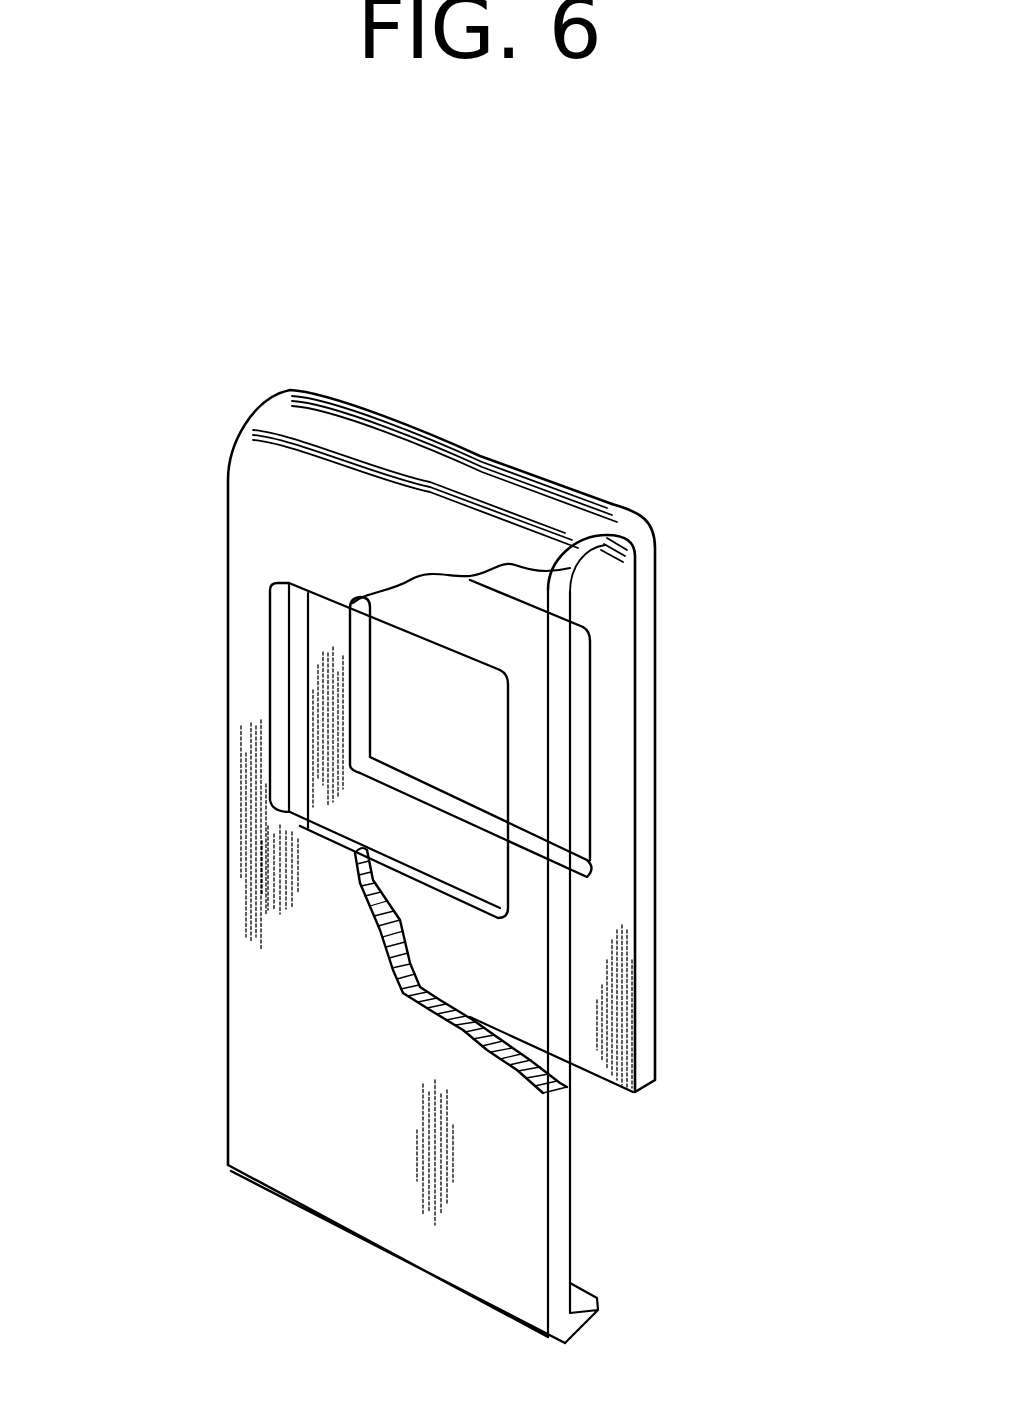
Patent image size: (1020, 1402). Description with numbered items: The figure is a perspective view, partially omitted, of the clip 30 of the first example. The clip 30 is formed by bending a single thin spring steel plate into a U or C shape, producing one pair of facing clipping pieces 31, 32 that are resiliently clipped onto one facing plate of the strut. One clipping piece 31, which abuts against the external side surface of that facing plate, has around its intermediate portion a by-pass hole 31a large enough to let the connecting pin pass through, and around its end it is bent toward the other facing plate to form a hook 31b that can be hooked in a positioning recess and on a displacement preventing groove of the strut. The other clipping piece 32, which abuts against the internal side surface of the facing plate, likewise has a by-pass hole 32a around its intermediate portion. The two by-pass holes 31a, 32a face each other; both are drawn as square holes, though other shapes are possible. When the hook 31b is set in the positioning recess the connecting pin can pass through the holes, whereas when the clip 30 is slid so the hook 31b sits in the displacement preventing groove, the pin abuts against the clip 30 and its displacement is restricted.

The clip 30 is at (280, 386).
The clipping piece 31 is at (570, 1212).
The by-pass hole 31a is at (278, 735).
The hook 31b is at (597, 1310).
The clipping piece 32 is at (657, 980).
The by-pass hole 32a is at (360, 652).